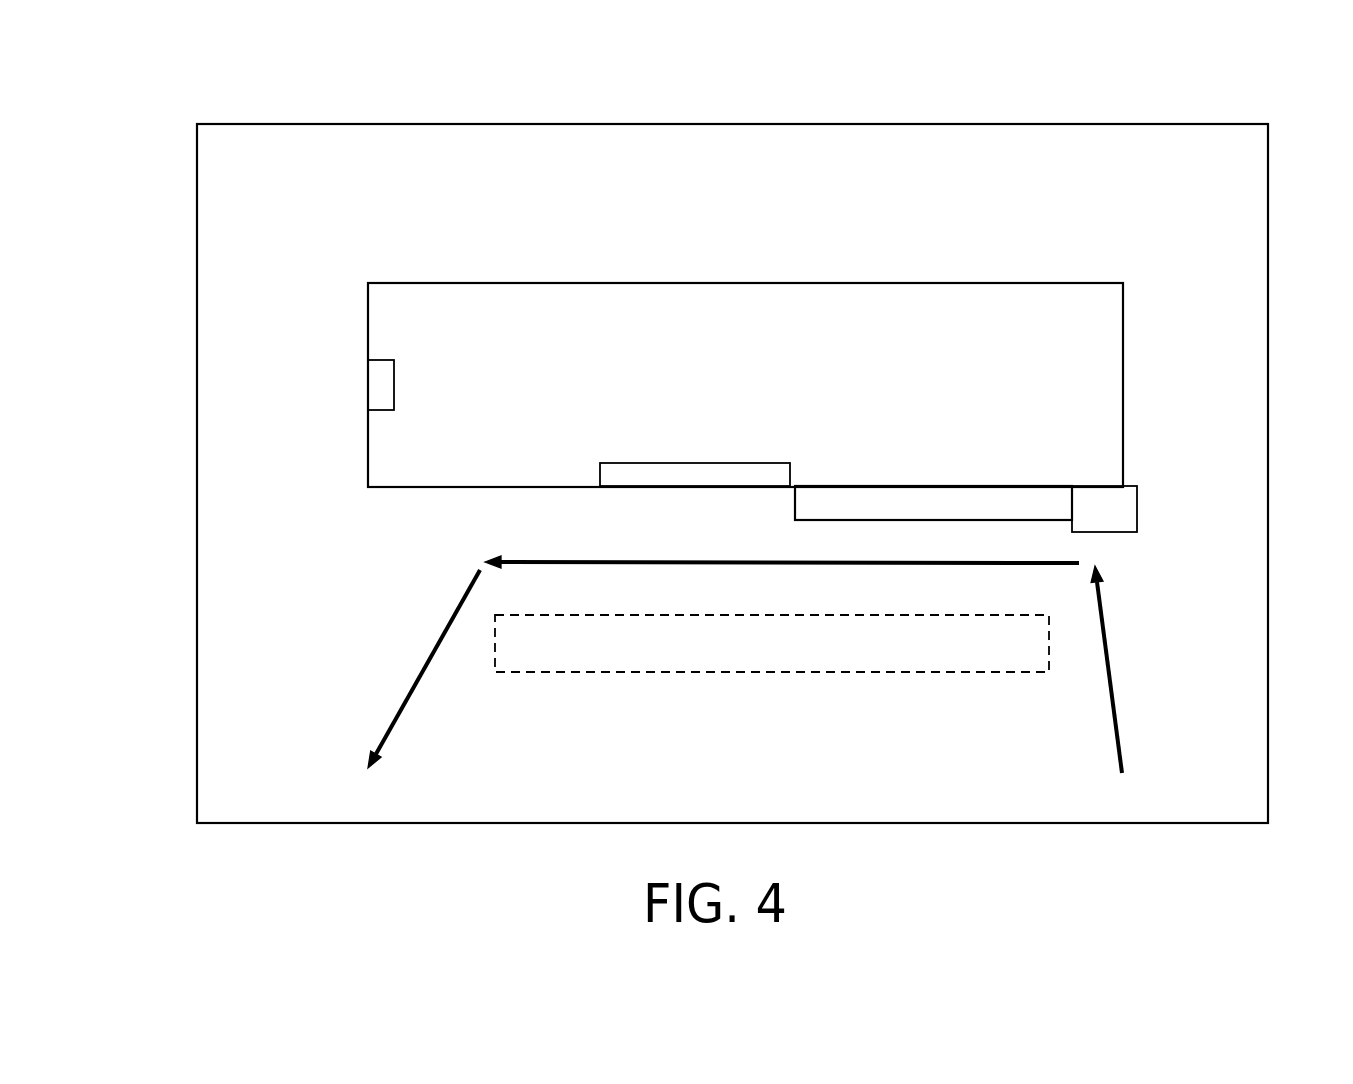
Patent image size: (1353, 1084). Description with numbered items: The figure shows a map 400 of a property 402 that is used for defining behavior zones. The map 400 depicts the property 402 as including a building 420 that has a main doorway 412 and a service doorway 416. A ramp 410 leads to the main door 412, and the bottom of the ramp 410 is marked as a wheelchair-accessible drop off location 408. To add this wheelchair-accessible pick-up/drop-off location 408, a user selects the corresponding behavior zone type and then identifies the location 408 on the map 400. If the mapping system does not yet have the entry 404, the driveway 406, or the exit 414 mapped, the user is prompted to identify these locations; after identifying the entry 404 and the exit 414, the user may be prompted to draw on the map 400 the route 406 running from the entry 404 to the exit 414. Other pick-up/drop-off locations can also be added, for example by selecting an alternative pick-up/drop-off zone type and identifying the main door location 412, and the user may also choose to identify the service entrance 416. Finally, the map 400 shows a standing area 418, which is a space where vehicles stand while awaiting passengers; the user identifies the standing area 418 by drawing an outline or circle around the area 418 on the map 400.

The map 400 is at (133, 110).
The property 402 is at (1242, 122).
The entry 404 is at (1113, 804).
The driveway 406 is at (1107, 642).
The wheelchair-accessible drop off location 408 is at (1092, 477).
The ramp 410 is at (933, 503).
The main doorway 412 is at (645, 462).
The exit 414 is at (355, 803).
The service doorway 416 is at (393, 388).
The standing area 418 is at (772, 643).
The building 420 is at (1100, 323).